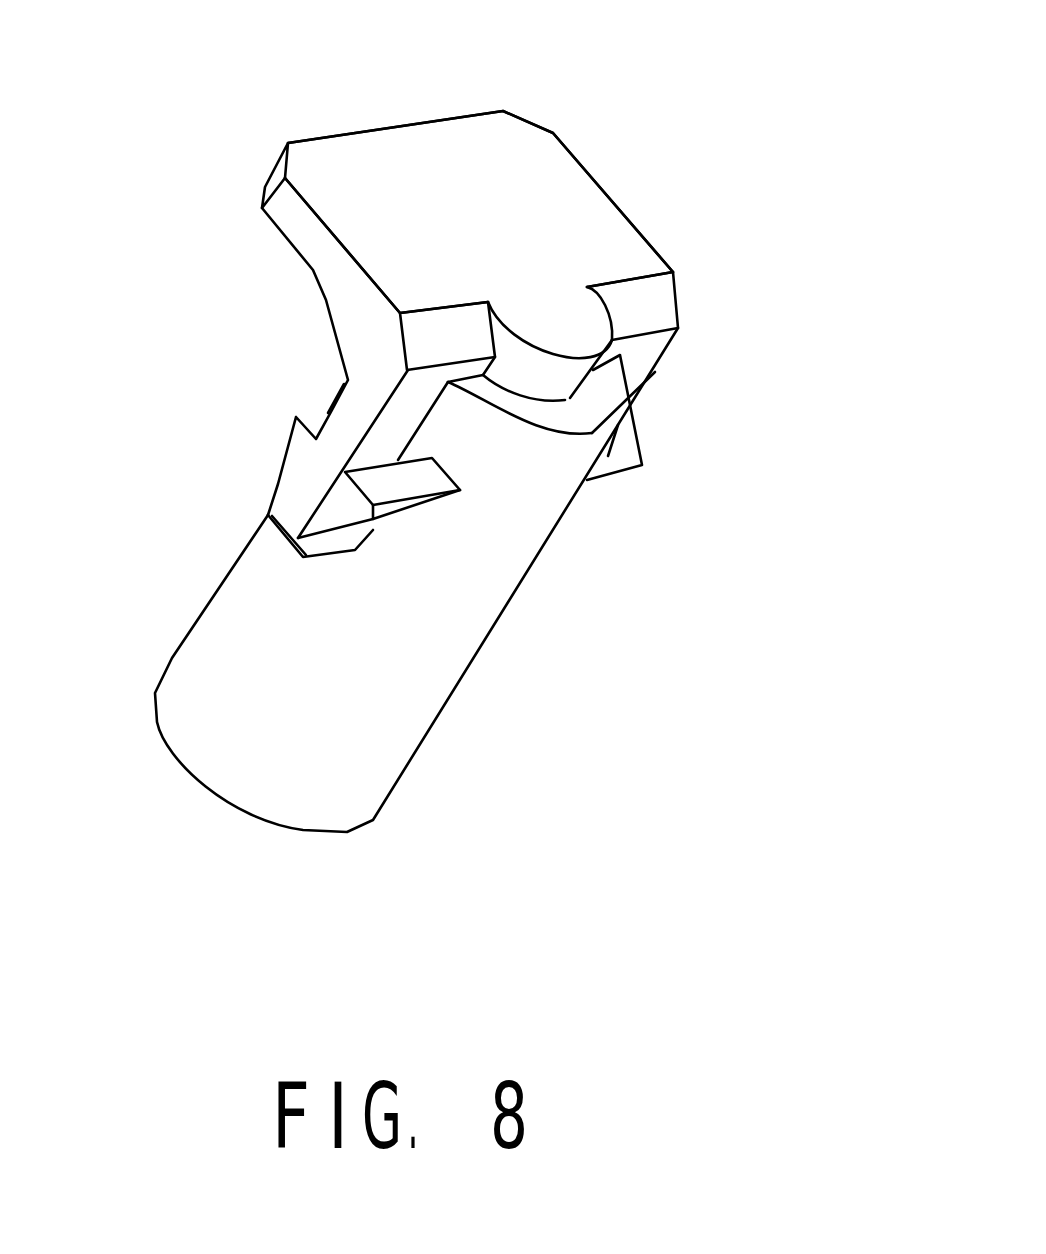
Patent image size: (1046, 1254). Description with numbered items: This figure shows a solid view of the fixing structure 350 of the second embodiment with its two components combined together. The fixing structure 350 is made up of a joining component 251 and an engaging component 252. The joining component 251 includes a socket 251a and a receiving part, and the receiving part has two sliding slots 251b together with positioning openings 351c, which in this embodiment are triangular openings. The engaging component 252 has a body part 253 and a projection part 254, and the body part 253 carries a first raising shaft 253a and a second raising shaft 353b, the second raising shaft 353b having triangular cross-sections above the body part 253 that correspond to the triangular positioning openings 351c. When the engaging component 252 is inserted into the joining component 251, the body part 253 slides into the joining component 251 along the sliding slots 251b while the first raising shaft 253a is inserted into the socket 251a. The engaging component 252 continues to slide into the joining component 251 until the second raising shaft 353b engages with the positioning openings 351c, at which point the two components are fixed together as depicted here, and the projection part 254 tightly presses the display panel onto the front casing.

The fixing structure 350 is at (495, 491).
The joining component 251 is at (425, 740).
The socket 251a is at (565, 400).
The sliding slots 251b is at (432, 408).
The engaging component 252 is at (621, 203).
The body part 253 is at (657, 370).
The first raising shaft 253a is at (594, 369).
The projection part 254 is at (400, 153).
The positioning openings 351c is at (430, 505).
The second raising shaft 353b is at (302, 488).